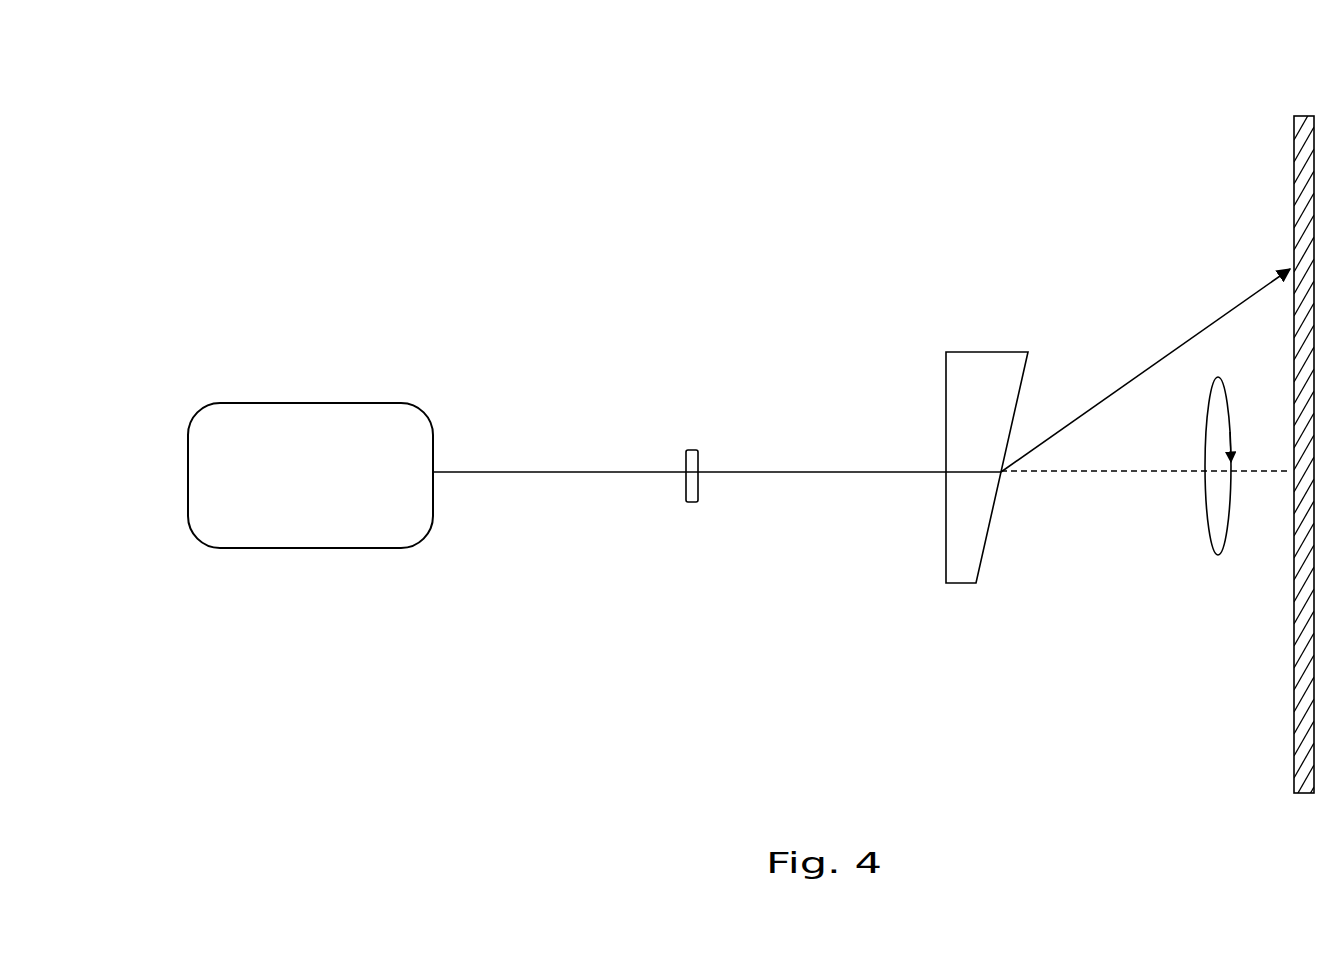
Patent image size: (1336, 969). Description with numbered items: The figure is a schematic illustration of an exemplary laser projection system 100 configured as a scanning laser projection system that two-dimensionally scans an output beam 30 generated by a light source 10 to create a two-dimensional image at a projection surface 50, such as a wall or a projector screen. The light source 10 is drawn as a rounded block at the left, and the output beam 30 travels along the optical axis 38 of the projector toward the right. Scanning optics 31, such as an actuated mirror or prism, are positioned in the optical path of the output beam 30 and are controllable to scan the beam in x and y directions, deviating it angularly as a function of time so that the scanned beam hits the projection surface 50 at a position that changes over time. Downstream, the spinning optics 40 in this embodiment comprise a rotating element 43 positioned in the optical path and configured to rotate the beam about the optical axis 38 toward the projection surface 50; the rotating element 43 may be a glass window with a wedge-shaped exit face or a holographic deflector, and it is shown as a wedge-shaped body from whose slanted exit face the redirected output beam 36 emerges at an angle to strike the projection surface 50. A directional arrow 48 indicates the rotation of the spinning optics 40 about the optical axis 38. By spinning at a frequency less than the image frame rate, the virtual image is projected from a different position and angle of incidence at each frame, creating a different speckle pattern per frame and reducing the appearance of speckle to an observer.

The laser projection system 100 is at (464, 108).
The light source 10 is at (219, 395).
The output beam 30 is at (513, 472).
The scanning optics 31 is at (693, 502).
The spinning optics 40 is at (883, 429).
The rotating element 43 is at (975, 352).
The redirected output beam 36 is at (1139, 314).
The optical axis 38 is at (1133, 472).
The directional arrow 48 is at (1218, 555).
The projection surface 50 is at (1308, 116).